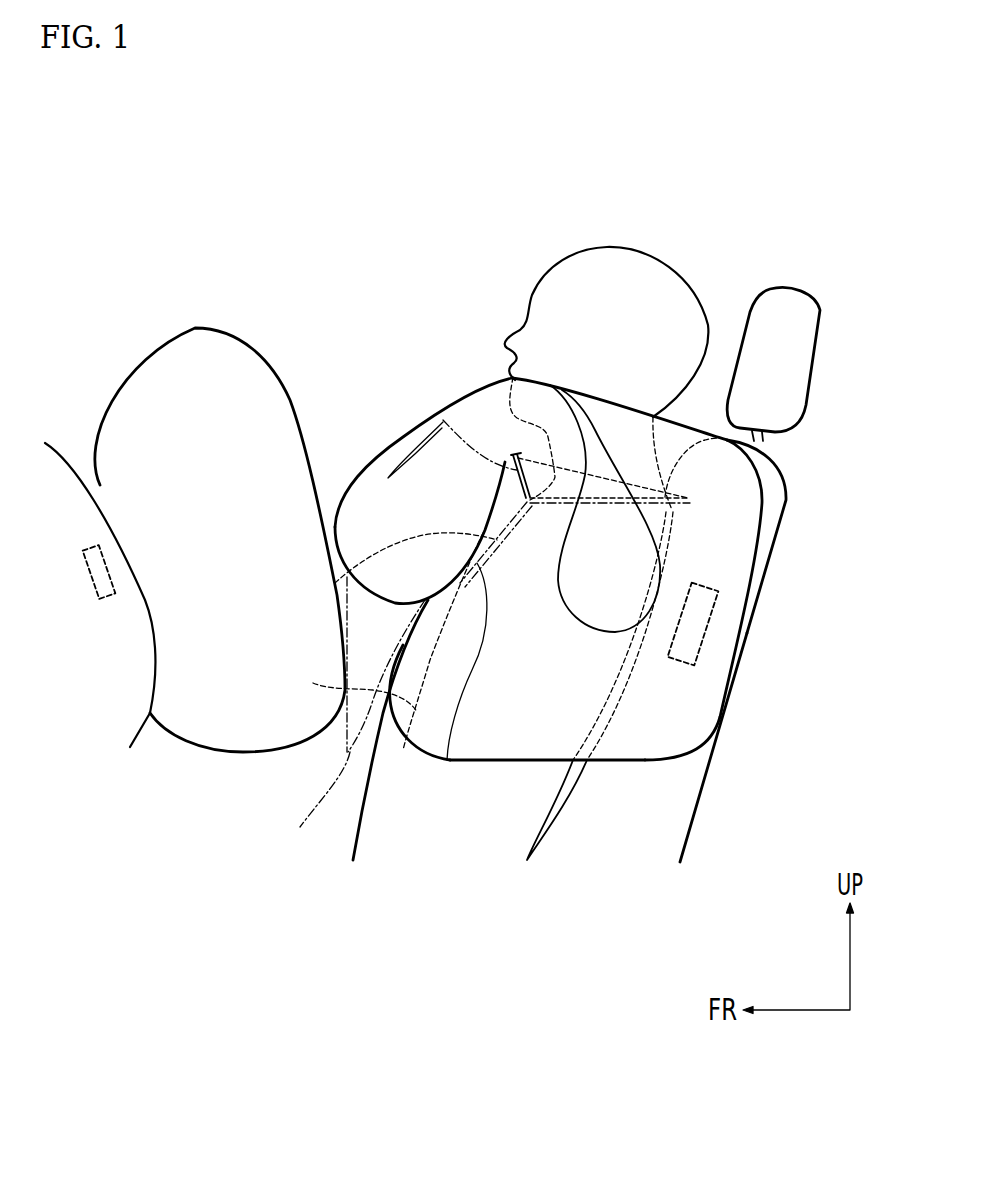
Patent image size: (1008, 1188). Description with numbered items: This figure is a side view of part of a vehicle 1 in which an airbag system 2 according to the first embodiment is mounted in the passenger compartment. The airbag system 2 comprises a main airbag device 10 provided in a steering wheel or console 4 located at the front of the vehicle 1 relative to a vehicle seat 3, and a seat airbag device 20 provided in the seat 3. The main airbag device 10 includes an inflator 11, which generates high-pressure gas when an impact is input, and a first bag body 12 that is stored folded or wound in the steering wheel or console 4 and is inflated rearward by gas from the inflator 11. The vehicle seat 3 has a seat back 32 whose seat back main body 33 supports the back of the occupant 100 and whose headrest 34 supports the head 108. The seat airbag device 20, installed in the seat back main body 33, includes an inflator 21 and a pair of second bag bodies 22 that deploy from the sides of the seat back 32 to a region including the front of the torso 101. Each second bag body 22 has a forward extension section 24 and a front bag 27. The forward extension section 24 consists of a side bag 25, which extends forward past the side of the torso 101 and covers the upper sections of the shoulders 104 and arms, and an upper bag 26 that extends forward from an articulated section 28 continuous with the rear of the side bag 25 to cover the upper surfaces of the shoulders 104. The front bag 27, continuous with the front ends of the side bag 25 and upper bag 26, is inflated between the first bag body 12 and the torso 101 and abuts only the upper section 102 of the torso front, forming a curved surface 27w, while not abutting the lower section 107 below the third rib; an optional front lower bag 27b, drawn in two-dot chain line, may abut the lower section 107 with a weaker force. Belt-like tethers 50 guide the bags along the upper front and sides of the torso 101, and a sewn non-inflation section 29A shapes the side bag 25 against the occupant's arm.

The vehicle 1 is at (268, 200).
The airbag system 2 is at (480, 253).
The vehicle seat 3 is at (788, 493).
The steering wheel or console 4 is at (100, 485).
The main airbag device 10 is at (283, 377).
The inflator 11 is at (110, 572).
The first bag body 12 is at (270, 753).
The seat airbag device 20 is at (468, 385).
The inflator 21 is at (713, 617).
The second bag body 22 is at (762, 578).
The forward extension section 24 is at (561, 569).
The side bag 25 is at (525, 723).
The upper bag 26 is at (632, 423).
The front bag 27 is at (367, 482).
The front lower bag 27b is at (351, 718).
The curved surface 27w is at (447, 760).
The articulated section 28 is at (744, 607).
The non-inflation section 29A is at (593, 577).
The seat back 32 is at (703, 787).
The seat back main body 33 is at (720, 720).
The headrest 34 is at (820, 357).
The belt-like tether 50 is at (450, 423).
The occupant 100 is at (560, 257).
The torso 101 is at (367, 820).
The upper section of the front surface of the torso 102 is at (360, 577).
The shoulder 104 is at (665, 498).
The lower section of the front surface of the torso 107 is at (343, 688).
The head of occupant 108 is at (627, 247).